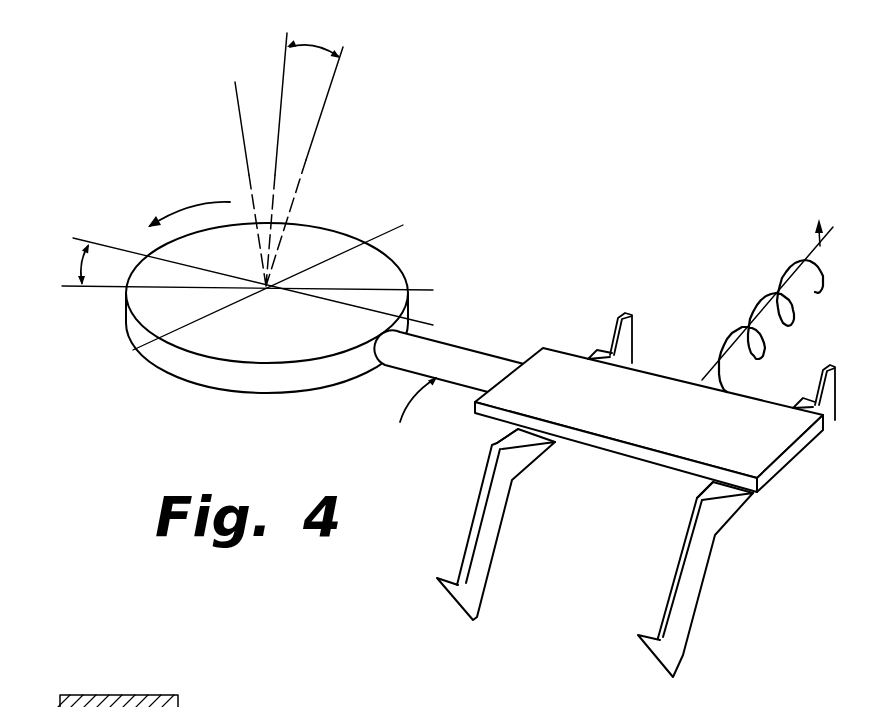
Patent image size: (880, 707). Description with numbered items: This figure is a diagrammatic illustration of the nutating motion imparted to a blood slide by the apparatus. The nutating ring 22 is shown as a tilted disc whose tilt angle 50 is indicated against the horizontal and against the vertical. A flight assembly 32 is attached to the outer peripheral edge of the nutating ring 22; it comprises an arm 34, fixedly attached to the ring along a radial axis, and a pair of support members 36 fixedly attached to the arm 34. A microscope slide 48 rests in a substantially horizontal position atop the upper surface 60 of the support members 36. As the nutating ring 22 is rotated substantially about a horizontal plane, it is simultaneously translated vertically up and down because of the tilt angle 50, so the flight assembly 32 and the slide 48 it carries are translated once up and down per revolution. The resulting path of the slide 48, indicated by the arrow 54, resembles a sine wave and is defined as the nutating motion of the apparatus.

The nutating ring 22 is at (383, 266).
The flight assembly 32 is at (410, 418).
The arm 34 is at (467, 358).
The support member 36 is at (485, 543).
The microscope slide 48 is at (645, 382).
The tilt angle 50 is at (333, 56).
The arrow 54 is at (798, 332).
The upper surface 60 is at (510, 440).